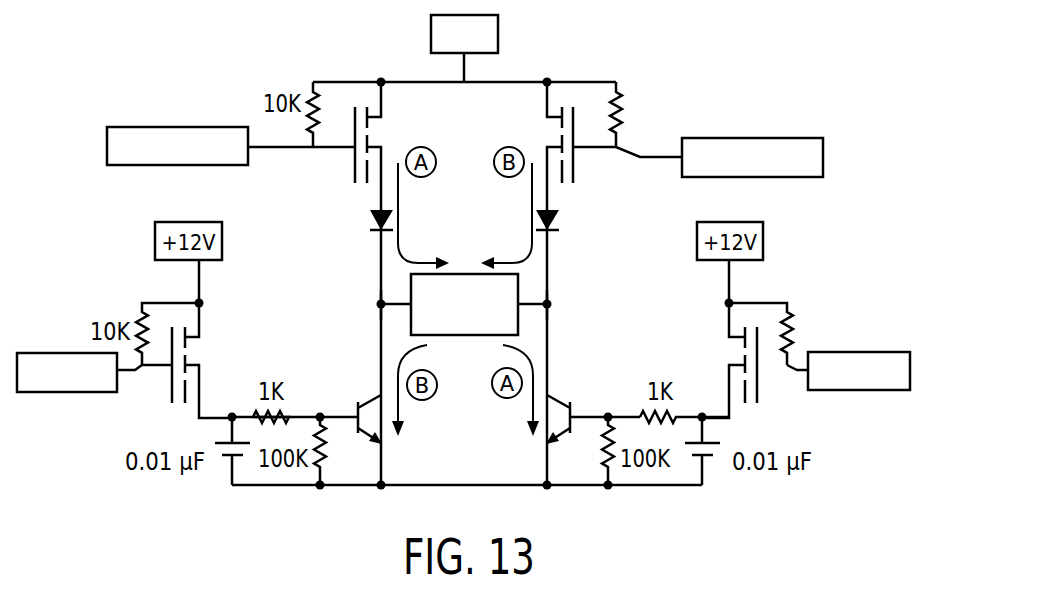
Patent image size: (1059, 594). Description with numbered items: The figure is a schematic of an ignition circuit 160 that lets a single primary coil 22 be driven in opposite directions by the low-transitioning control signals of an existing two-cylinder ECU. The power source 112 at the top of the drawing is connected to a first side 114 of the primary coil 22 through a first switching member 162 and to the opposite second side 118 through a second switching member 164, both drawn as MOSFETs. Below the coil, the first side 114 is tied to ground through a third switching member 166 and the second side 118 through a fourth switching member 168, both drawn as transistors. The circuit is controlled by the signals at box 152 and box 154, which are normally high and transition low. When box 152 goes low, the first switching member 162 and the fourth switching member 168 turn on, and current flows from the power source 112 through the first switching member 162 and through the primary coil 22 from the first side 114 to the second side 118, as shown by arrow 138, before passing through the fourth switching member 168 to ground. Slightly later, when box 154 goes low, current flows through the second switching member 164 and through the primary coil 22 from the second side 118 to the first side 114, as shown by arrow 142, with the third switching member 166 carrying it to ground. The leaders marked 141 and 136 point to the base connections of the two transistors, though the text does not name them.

The power source 112 is at (498, 32).
The ignition circuit 160 is at (658, 68).
The first output signal 152 is at (180, 127).
The second output signal 154 is at (750, 138).
The first switching member 162 is at (402, 133).
The second switching member 164 is at (526, 133).
The arrow 138 is at (412, 250).
The arrow 142 is at (532, 223).
The primary coil 22 is at (461, 336).
The first side 114 is at (400, 308).
The second side 118 is at (528, 312).
The third switching member 166 is at (363, 380).
The fourth switching member 168 is at (565, 380).
The base of first low-side transistor 141 is at (355, 410).
The base of second low-side transistor 136 is at (575, 407).